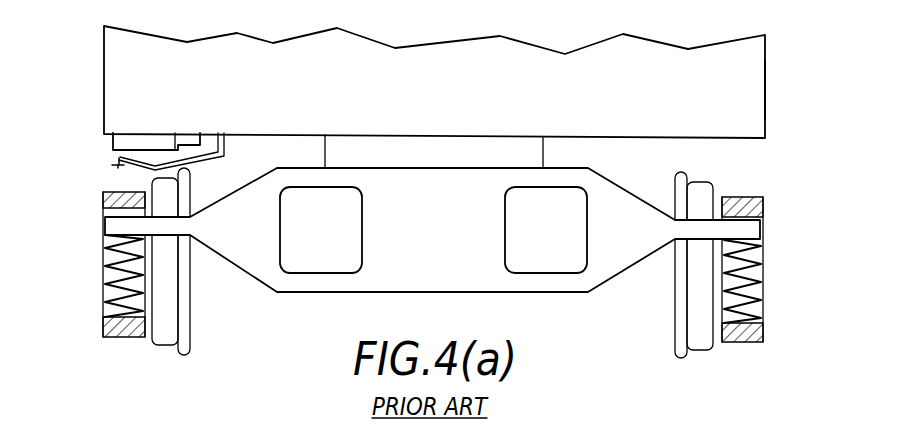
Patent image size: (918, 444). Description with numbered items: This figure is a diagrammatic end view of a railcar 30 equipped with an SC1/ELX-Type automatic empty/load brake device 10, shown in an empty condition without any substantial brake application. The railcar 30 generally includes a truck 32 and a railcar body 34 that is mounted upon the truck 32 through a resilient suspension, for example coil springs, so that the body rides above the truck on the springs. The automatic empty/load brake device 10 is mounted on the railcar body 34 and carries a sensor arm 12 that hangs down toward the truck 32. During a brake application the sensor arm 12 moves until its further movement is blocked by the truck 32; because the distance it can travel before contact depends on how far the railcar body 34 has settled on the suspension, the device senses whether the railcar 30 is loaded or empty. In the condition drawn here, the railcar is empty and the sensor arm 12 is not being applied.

The automatic empty/load brake device 10 is at (113, 140).
The sensor arm 12 is at (112, 168).
The railcar 30 is at (823, 38).
The truck 32 is at (782, 229).
The railcar body 34 is at (769, 94).